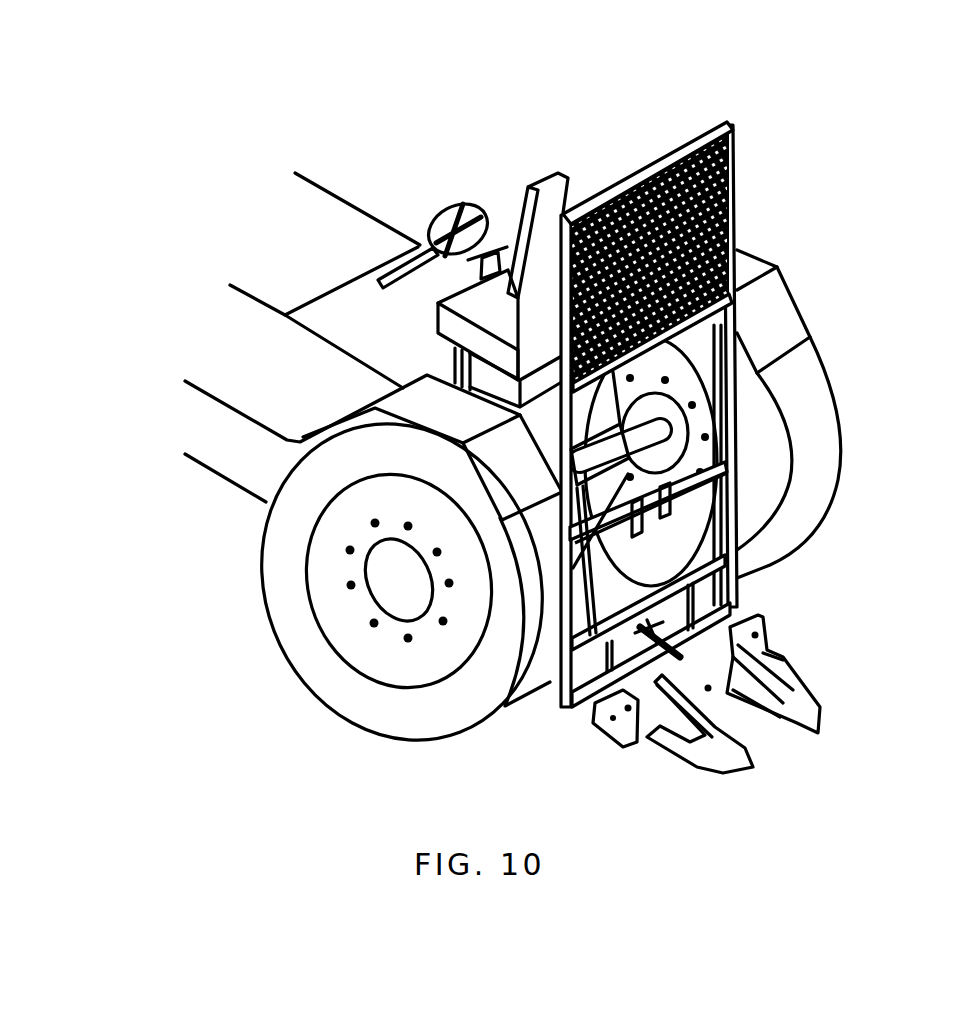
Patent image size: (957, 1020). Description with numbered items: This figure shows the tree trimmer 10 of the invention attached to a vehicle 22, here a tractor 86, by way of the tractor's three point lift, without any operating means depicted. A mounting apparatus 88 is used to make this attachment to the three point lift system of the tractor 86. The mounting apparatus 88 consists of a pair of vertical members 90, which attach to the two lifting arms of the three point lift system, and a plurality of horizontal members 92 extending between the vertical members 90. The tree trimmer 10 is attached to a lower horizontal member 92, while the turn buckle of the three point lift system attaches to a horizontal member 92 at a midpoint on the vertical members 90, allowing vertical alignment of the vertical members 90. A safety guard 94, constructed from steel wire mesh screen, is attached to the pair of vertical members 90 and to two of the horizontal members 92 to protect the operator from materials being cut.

The tree trimmer 10 is at (798, 658).
The vehicle 22 is at (333, 222).
The tractor 86 is at (737, 366).
The mounting apparatus 88 is at (738, 535).
The vertical members 90 is at (728, 126).
The horizontal members 92 is at (648, 173).
The safety guard 94 is at (737, 208).